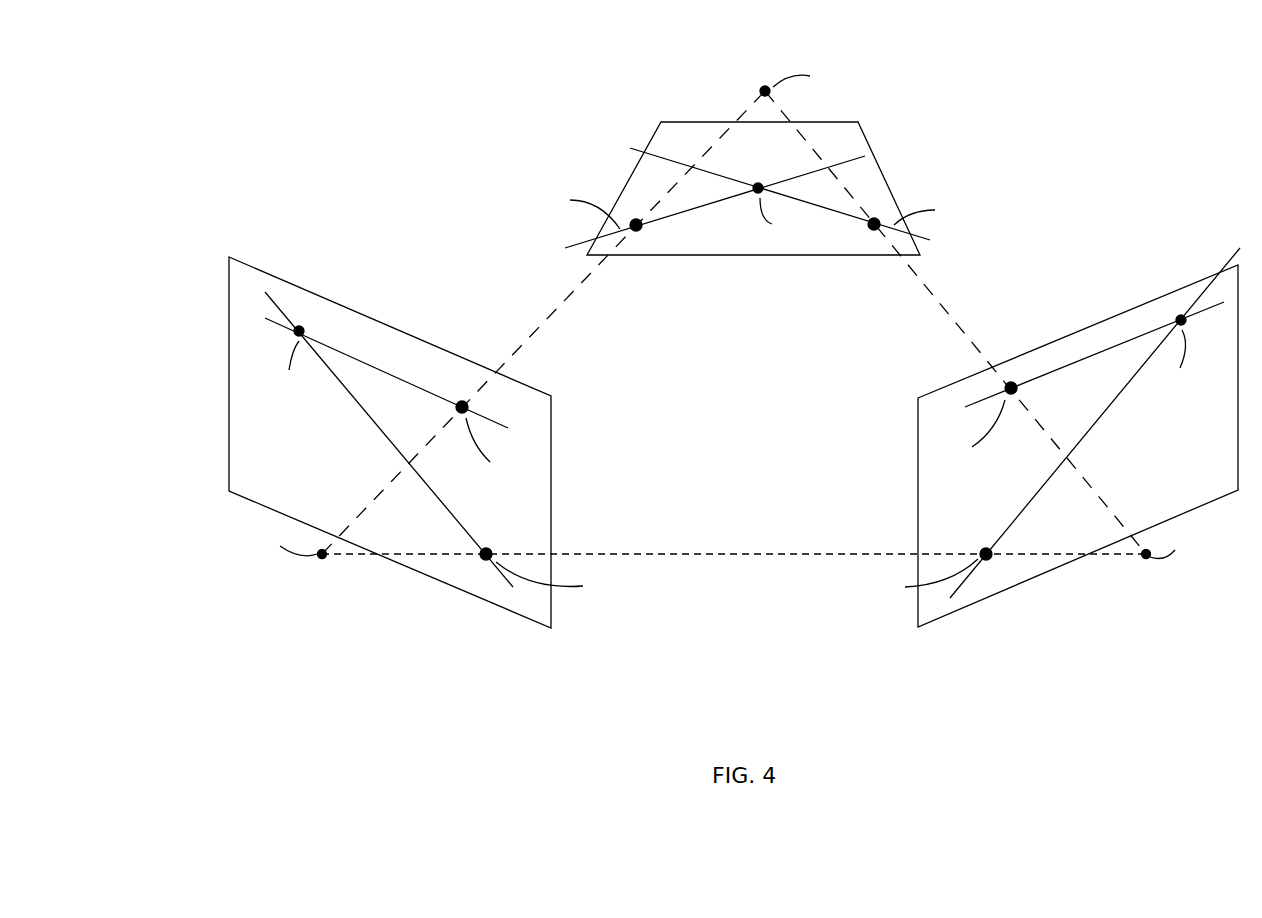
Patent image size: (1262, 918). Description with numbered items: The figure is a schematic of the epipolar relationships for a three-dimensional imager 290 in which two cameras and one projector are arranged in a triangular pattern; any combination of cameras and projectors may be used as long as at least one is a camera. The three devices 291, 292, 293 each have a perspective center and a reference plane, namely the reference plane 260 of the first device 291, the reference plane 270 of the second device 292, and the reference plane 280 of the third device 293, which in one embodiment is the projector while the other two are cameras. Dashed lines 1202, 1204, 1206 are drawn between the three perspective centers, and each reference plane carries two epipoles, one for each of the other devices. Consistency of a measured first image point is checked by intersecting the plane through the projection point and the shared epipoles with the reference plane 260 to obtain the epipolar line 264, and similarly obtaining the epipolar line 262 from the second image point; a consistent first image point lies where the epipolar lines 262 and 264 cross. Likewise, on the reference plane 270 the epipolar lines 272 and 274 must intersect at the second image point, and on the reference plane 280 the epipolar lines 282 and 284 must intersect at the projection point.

The 3D imager 290 is at (438, 96).
The device 1 291 is at (354, 243).
The device 2 292 is at (1114, 251).
The device 3 293 is at (689, 86).
The reference plane 260 is at (541, 390).
The epipolar line 262 is at (348, 390).
The epipolar line 264 is at (342, 351).
The reference plane 270 is at (943, 387).
The epipolar line 272 is at (1127, 387).
The epipolar line 274 is at (1130, 340).
The reference plane 280 is at (690, 258).
The epipolar line 282 is at (692, 207).
The epipolar line 284 is at (838, 210).
The baseline between optical centers O1 and O2 1202 is at (733, 552).
The baseline between optical centers O1 and O3 1204 is at (519, 340).
The baseline between optical centers O3 and O2 1206 is at (959, 320).